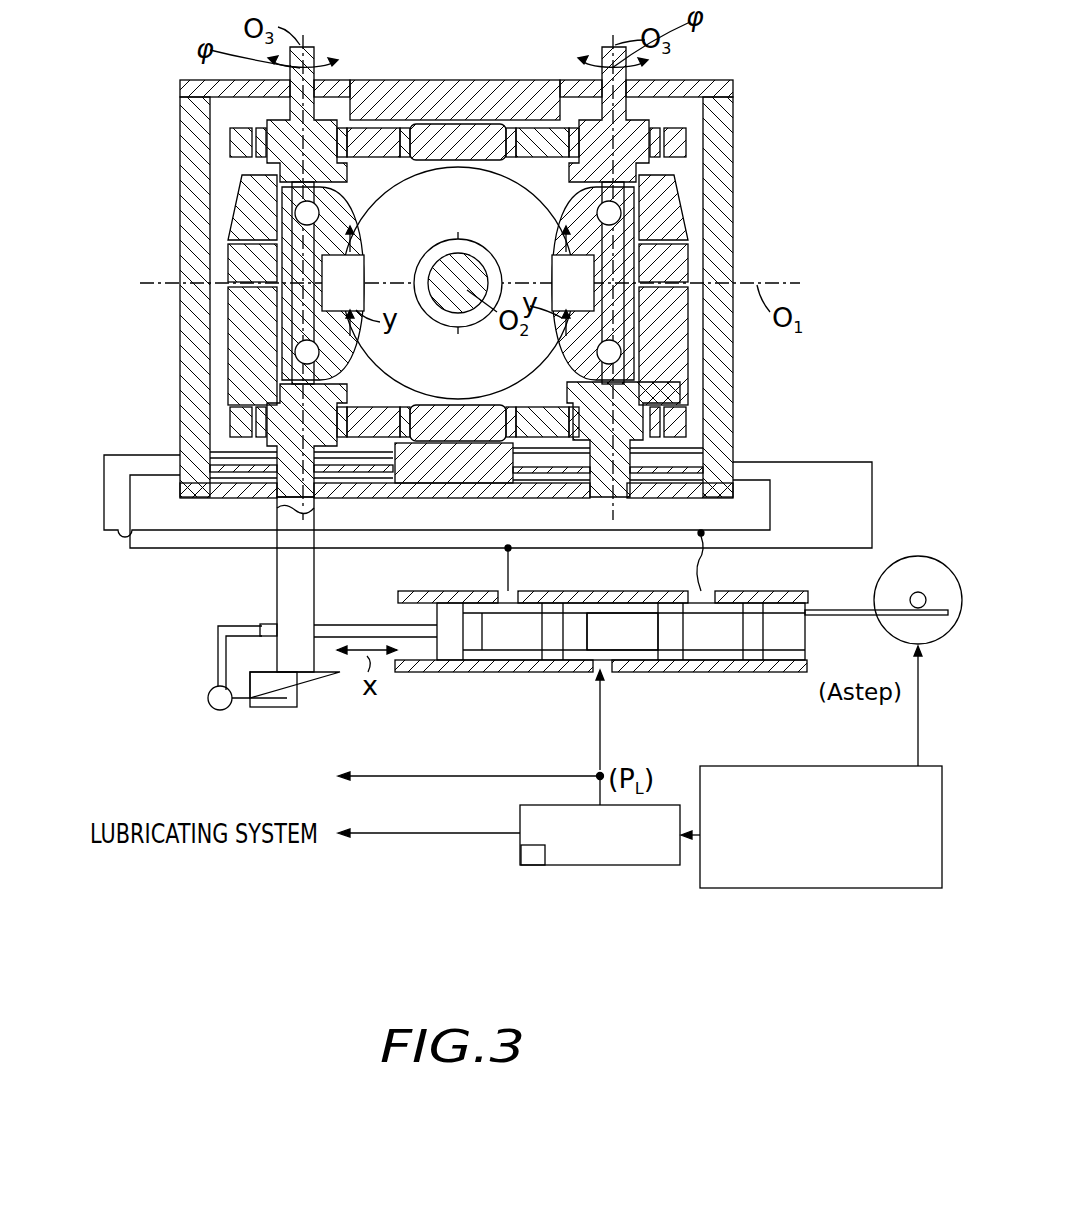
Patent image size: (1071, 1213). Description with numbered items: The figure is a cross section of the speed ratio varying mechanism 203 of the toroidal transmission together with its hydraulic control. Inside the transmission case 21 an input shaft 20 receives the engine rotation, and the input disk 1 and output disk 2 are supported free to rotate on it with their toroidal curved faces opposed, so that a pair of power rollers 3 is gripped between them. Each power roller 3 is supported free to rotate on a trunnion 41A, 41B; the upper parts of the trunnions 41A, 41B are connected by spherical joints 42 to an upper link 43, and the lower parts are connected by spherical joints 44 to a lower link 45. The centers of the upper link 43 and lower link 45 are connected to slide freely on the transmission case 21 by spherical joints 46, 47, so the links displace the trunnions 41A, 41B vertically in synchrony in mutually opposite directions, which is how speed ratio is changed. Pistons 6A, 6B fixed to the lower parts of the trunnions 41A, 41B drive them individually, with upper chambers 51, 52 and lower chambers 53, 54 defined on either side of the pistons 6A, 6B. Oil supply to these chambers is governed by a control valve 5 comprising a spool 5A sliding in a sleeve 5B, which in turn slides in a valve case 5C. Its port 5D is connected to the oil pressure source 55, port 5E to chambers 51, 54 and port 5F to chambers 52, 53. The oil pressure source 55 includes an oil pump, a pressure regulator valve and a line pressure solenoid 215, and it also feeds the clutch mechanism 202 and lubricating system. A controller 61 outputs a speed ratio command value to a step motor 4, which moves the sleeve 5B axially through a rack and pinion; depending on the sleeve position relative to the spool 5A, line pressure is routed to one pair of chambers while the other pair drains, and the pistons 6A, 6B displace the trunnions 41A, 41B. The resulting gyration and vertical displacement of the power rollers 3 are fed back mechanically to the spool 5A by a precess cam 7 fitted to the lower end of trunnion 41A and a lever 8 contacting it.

The input disk 1 is at (383, 185).
The output disk 2 is at (458, 202).
The power rollers 3 is at (360, 232).
The step motor 4 is at (917, 557).
The control valve 5 is at (540, 655).
The spool 5A is at (676, 644).
The sleeve 5B is at (780, 660).
The valve case 5C is at (760, 592).
The port 5D is at (597, 672).
The port 5E is at (697, 595).
The port 5F is at (507, 590).
The piston 6A is at (267, 472).
The piston 6B is at (683, 447).
The precess cam 7 is at (320, 677).
The lever 8 is at (212, 708).
The input shaft 20 is at (470, 312).
The transmission case 21 is at (735, 163).
The trunnion 41A is at (245, 218).
The trunnion 41B is at (670, 218).
The spherical joints 42 is at (338, 125).
The upper link 43 is at (678, 128).
The spherical joints 44 is at (365, 402).
The lower link 45 is at (690, 415).
The spherical joint 46 is at (470, 115).
The spherical joint 47 is at (427, 402).
The upper chamber 51 is at (237, 455).
The upper chamber 52 is at (705, 448).
The lower chamber 53 is at (233, 482).
The lower chamber 54 is at (670, 484).
The oil pressure source 55 is at (578, 866).
The controller 61 is at (853, 766).
The clutch mechanism 202 is at (330, 779).
The speed ratio varying mechanism 203 is at (515, 269).
The line pressure solenoid 215 is at (520, 853).